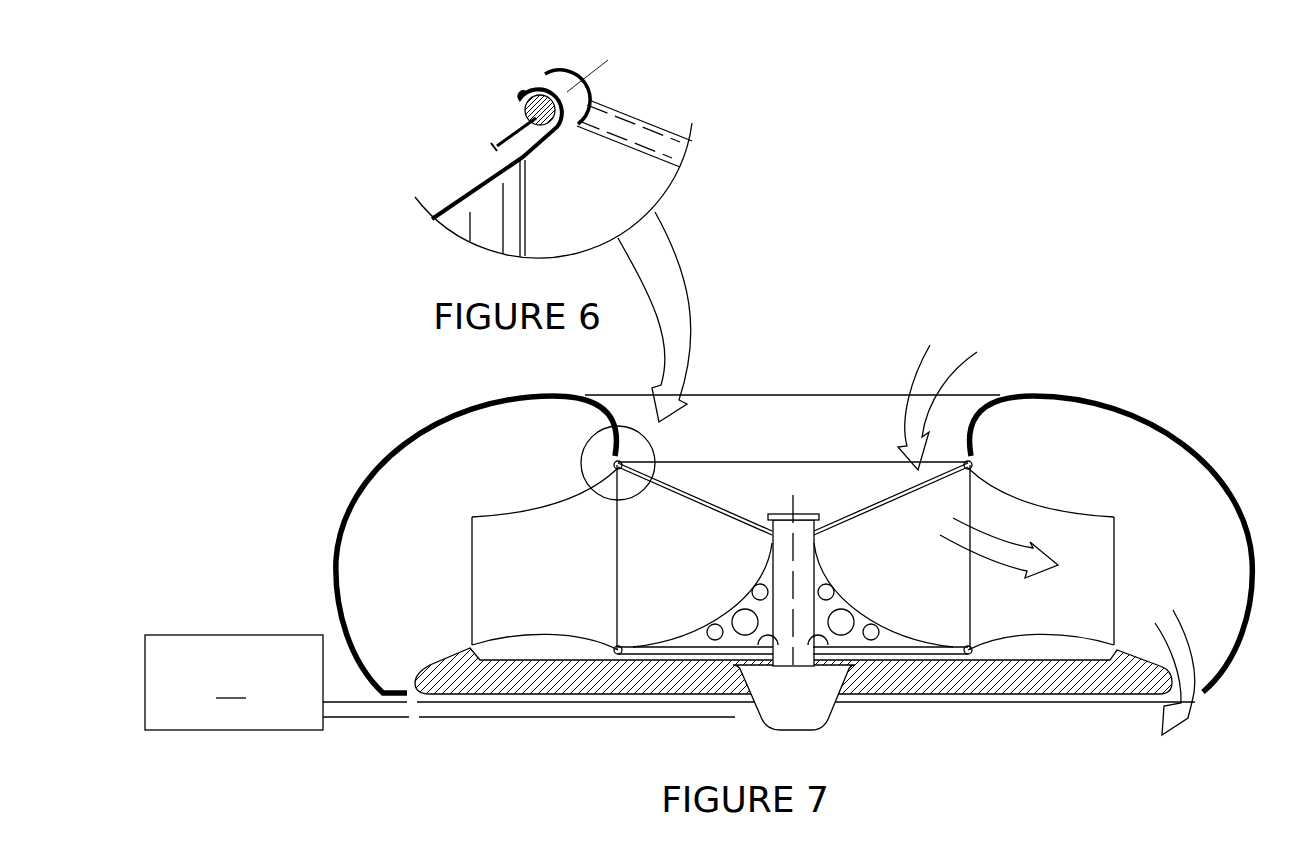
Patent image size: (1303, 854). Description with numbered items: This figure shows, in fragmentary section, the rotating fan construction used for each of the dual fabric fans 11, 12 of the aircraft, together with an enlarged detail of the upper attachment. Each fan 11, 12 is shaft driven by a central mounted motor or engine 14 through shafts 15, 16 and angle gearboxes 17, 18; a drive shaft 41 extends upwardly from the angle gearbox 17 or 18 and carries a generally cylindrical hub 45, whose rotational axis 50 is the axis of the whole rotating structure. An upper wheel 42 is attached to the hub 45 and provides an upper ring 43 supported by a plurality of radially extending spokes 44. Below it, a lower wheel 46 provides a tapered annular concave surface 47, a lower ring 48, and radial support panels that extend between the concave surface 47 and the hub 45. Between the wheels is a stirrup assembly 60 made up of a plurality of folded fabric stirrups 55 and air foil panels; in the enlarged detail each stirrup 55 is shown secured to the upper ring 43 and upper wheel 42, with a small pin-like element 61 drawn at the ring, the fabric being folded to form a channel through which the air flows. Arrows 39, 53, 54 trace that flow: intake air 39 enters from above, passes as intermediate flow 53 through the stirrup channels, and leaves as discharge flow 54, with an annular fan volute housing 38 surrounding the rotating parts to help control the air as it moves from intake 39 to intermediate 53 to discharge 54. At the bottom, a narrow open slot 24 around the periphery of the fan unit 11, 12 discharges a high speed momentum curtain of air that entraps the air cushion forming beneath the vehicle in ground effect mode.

In FIG. 7, the fabric fan 11 is at (753, 498).
In FIG. 7, the fabric fan 12 is at (753, 498).
In FIG. 7, the motor or engine 14 is at (234, 682).
In FIG. 7, the shaft 15 is at (759, 736).
In FIG. 7, the shaft 16 is at (545, 718).
In FIG. 7, the angle gearbox 17 is at (852, 725).
In FIG. 7, the angle gearbox 18 is at (845, 720).
In FIG. 7, the open slot 24 is at (411, 700).
In FIG. 7, the annular fan volute housing 38 is at (350, 497).
In FIG. 7, the intake air flow arrow 39 is at (906, 355).
In FIG. 7, the drive shaft 41 is at (813, 513).
In FIG. 7, the upper wheel 42 is at (672, 496).
In FIG. 6, the upper ring 43 is at (518, 102).
In FIG. 6, the spoke 44 is at (642, 114).
In FIG. 7, the hub 45 is at (778, 546).
In FIG. 7, the lower wheel 46 is at (615, 645).
In FIG. 7, the tapered annular concave surface 47 is at (705, 612).
In FIG. 7, the lower ring 48 is at (625, 660).
In FIG. 7, the rotational axis 50 is at (789, 494).
In FIG. 7, the intermediate air flow arrow 53 is at (1003, 567).
In FIG. 7, the discharge air flow arrow 54 is at (1192, 713).
In FIG. 6, the stirrup 55 is at (450, 204).
In FIG. 7, the stirrup 55 is at (777, 547).
In FIG. 7, the stirrup assembly 60 is at (525, 504).
In FIG. 6, the pin 61 is at (500, 132).